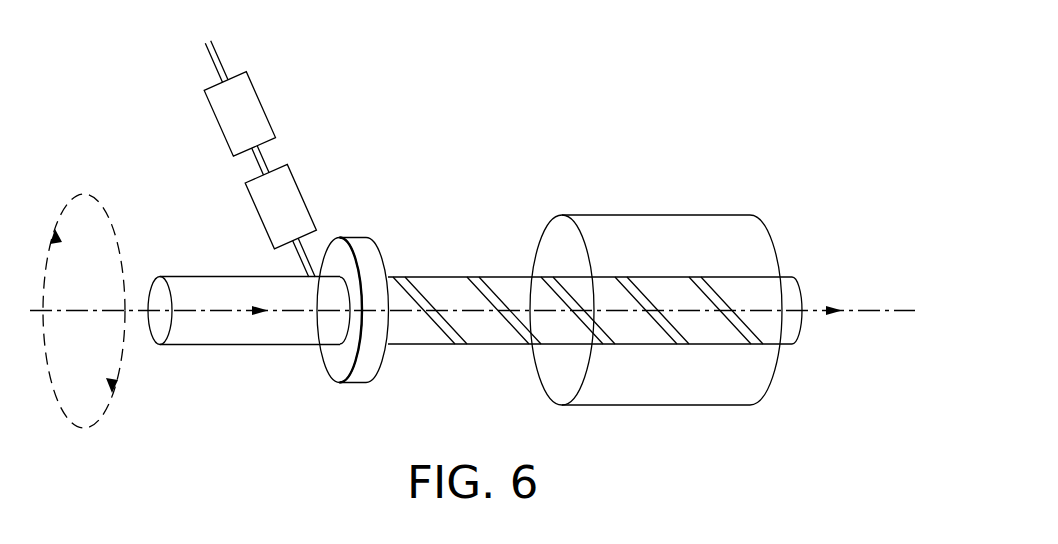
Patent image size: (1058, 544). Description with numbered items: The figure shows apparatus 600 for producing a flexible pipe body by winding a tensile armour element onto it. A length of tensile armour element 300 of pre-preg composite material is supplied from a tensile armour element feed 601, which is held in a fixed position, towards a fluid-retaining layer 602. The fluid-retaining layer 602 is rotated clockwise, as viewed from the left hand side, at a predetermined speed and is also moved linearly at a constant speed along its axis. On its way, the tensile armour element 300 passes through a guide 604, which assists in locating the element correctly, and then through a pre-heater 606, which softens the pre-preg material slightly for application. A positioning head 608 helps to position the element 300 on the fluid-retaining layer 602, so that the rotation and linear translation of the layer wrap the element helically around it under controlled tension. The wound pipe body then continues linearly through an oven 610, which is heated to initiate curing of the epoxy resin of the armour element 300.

The tensile armour element 300 is at (218, 55).
The apparatus 600 is at (727, 147).
The tensile armour element feed 601 is at (172, 101).
The fluid-retaining layer 602 is at (184, 277).
The guide 604 is at (262, 105).
The pre-heater 606 is at (303, 198).
The positioning head 608 is at (353, 385).
The oven 610 is at (720, 407).